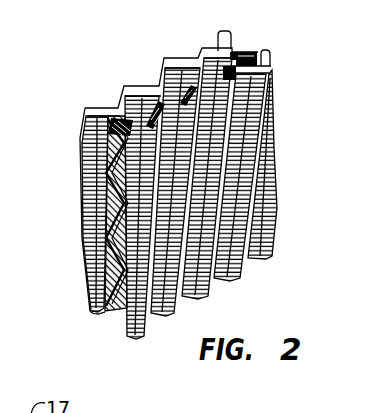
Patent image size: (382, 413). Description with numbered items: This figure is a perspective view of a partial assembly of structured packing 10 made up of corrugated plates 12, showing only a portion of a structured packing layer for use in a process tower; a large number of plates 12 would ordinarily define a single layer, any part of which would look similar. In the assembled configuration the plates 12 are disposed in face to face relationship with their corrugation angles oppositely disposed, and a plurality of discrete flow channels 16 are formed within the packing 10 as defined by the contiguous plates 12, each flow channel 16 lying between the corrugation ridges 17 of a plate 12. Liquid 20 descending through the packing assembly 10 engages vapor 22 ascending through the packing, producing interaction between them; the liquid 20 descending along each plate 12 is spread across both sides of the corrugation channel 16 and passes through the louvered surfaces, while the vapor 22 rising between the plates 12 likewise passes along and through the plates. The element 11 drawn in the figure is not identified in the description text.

The heat exchanger core assembly 10 is at (64, 235).
The plate 11 is at (265, 43).
The corrugated fin sheet 12 is at (111, 94).
The tab 16 is at (208, 30).
The fin 17 is at (256, 134).
The upper end 20 is at (130, 62).
The lower end 22 is at (157, 322).